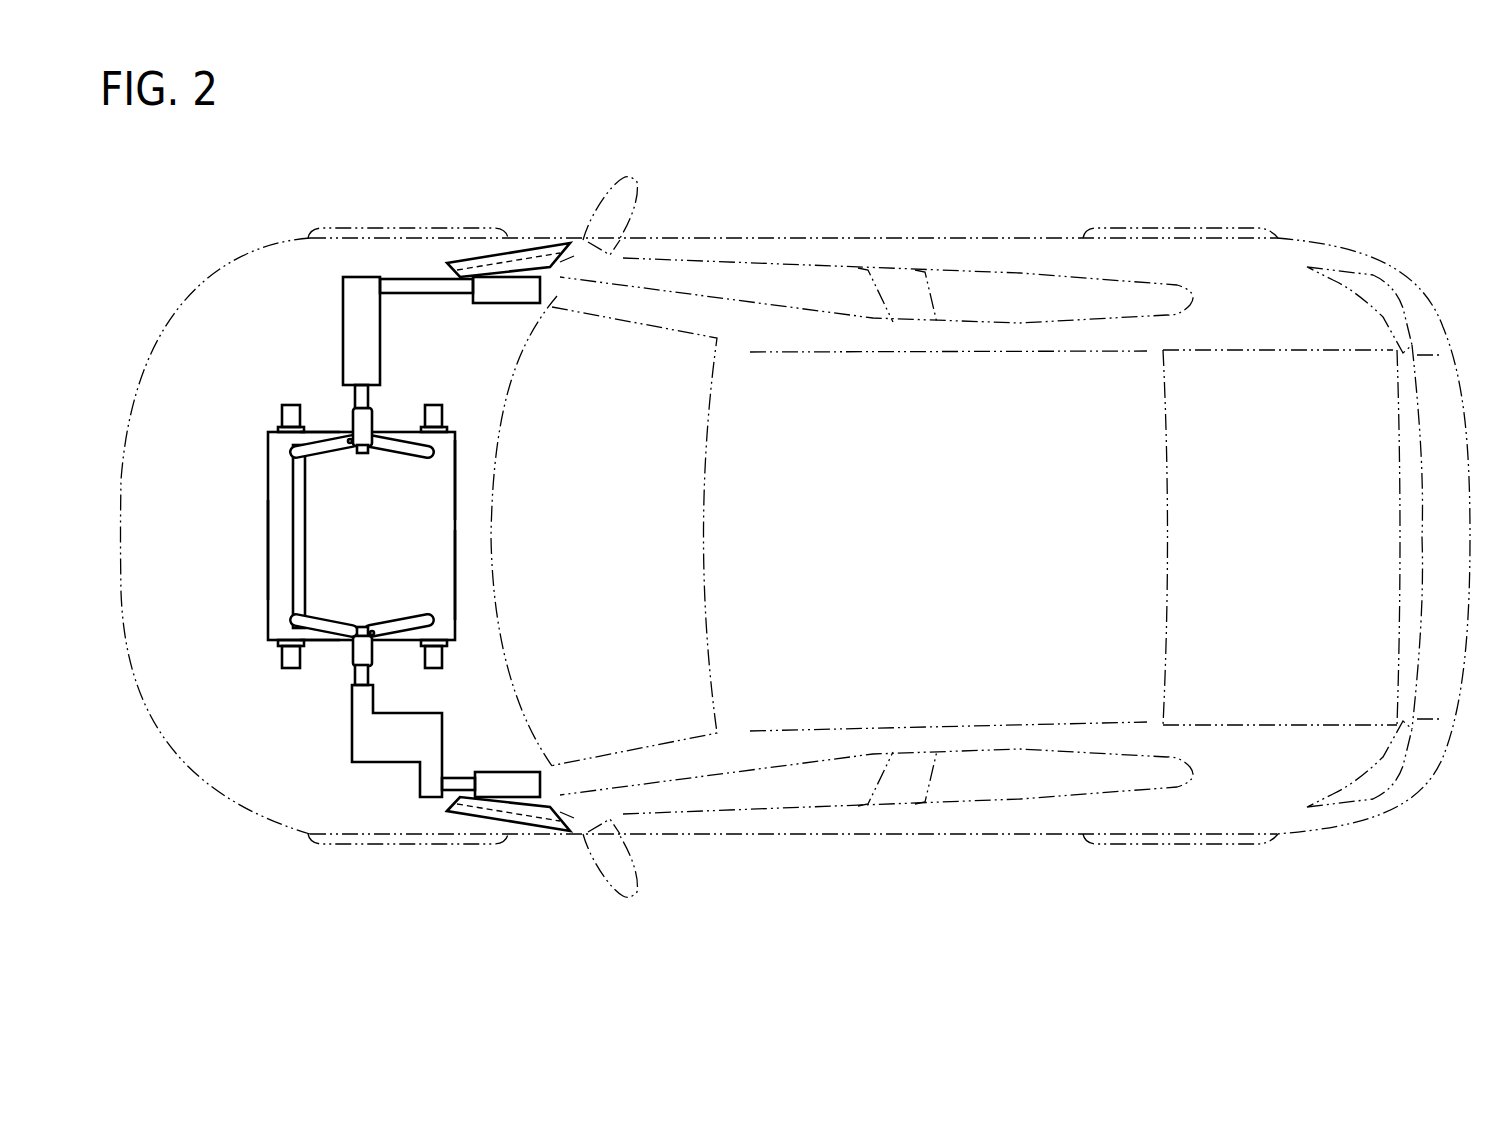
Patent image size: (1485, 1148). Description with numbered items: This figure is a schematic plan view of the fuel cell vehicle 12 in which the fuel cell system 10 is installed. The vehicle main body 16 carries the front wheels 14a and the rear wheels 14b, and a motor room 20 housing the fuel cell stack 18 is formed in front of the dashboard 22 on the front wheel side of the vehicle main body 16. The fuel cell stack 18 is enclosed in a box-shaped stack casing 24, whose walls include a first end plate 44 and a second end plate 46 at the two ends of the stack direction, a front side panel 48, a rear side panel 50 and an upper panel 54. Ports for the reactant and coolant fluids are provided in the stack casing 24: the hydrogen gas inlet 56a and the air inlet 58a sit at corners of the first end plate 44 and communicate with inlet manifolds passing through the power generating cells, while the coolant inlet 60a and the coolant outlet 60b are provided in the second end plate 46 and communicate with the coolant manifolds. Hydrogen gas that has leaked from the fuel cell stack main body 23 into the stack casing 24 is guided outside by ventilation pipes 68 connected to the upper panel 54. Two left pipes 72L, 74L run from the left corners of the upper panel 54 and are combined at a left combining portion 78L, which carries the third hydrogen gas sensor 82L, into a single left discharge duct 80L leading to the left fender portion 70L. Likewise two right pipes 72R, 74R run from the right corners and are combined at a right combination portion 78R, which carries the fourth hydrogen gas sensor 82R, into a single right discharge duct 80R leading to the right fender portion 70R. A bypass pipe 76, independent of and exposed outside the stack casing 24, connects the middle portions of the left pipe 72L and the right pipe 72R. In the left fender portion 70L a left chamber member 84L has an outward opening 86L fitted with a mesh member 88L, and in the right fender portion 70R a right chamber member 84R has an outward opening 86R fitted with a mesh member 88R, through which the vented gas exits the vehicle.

The fuel cell system 10 is at (266, 667).
The fuel cell vehicle 12 is at (123, 201).
The front wheels 14a is at (338, 227).
The rear wheels 14b is at (1155, 227).
The vehicle main body 16 is at (233, 247).
The fuel cell stack 18 is at (474, 583).
The motor room 20 is at (205, 293).
The dashboard 22 is at (492, 537).
The fuel cell stack main body 23 is at (450, 520).
The stack casing 24 is at (267, 478).
The first end plate 44 is at (320, 645).
The second end plate 46 is at (318, 430).
The front side panel 48 is at (267, 548).
The rear side panel 50 is at (457, 472).
The upper panel 54 is at (448, 550).
The hydrogen gas inlet 56a is at (293, 667).
The air inlet 58a is at (438, 658).
The coolant inlet 60a is at (435, 413).
The coolant outlet 60b is at (290, 413).
The ventilation pipes 68 is at (411, 334).
The right fender portion 70R is at (439, 239).
The left fender portion 70L is at (439, 834).
The right pipe 72R is at (290, 453).
The left pipe 72L is at (290, 618).
The right pipe 74R is at (437, 445).
The left pipe 74L is at (437, 620).
The bypass pipe 76 is at (297, 525).
The right combination portion 78R is at (347, 443).
The left combining portion 78L is at (375, 637).
The right discharge duct 80R is at (358, 283).
The left discharge duct 80L is at (443, 747).
The fourth hydrogen gas sensor 82R is at (360, 453).
The third hydrogen gas sensor 82L is at (360, 620).
The right chamber member 84R is at (524, 317).
The left chamber member 84L is at (526, 757).
The outward opening 86R is at (457, 258).
The outward opening 86L is at (457, 814).
The mesh member 88R is at (497, 266).
The mesh member 88L is at (497, 808).